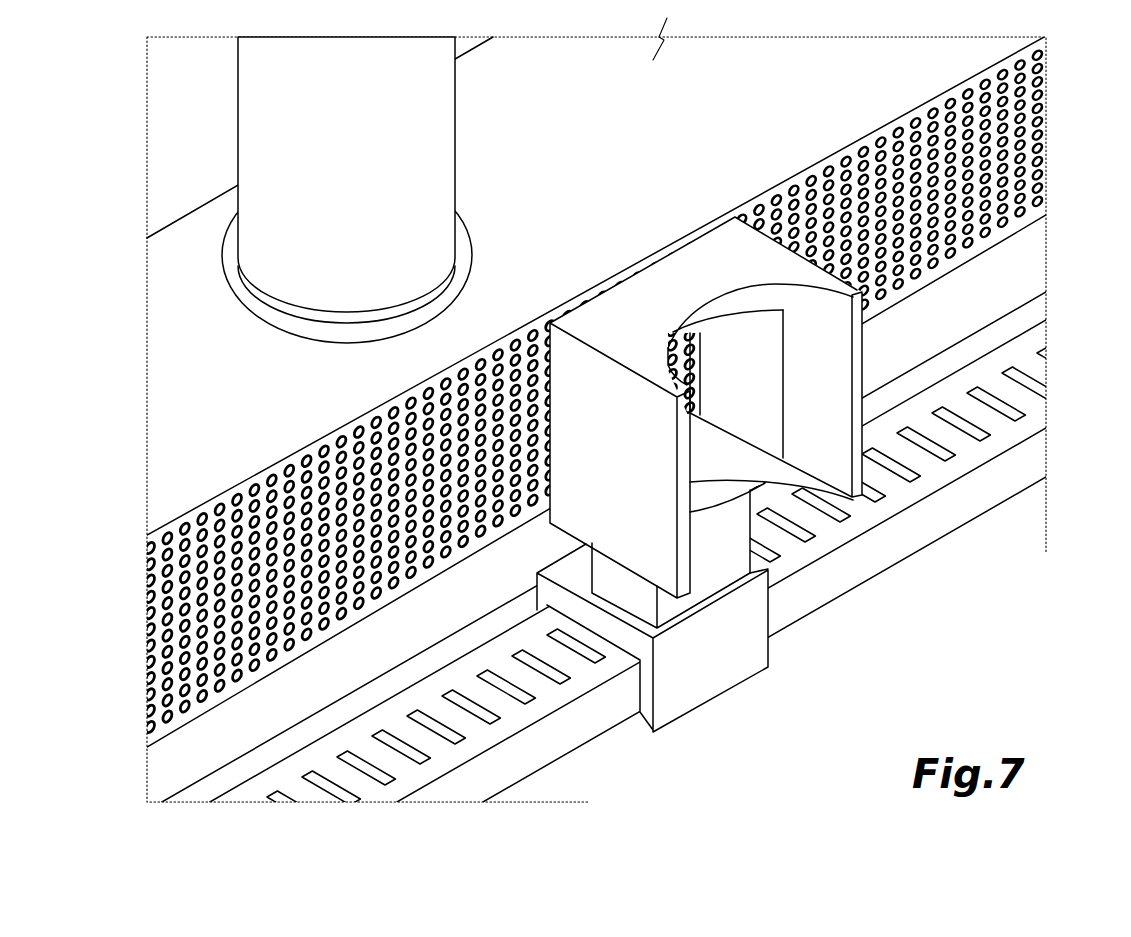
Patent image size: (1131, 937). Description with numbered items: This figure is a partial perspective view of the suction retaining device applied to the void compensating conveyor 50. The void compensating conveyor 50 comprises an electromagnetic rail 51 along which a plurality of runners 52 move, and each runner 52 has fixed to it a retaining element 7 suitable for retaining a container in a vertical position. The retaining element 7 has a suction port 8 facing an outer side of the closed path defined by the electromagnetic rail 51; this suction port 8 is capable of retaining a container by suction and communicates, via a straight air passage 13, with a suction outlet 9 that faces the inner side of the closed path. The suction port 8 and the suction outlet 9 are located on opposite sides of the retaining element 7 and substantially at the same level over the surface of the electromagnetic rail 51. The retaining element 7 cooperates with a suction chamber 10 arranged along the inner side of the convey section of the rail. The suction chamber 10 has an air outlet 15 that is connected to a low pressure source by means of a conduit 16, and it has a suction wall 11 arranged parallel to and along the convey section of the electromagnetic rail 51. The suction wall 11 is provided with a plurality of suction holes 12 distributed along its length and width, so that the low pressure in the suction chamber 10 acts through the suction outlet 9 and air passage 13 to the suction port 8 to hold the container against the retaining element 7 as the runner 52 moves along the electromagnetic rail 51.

The retaining element 7 is at (774, 395).
The suction port 8 is at (785, 408).
The suction outlet 9 is at (705, 362).
The suction chamber 10 is at (190, 232).
The suction wall 11 is at (186, 614).
The suction holes 12 is at (589, 391).
The straight air passage 13 is at (720, 450).
The air outlet 15 is at (253, 284).
The conduit 16 is at (247, 75).
The void compensating conveyor 50 is at (628, 558).
The electromagnetic rail 51 is at (522, 717).
The runner 52 is at (715, 677).